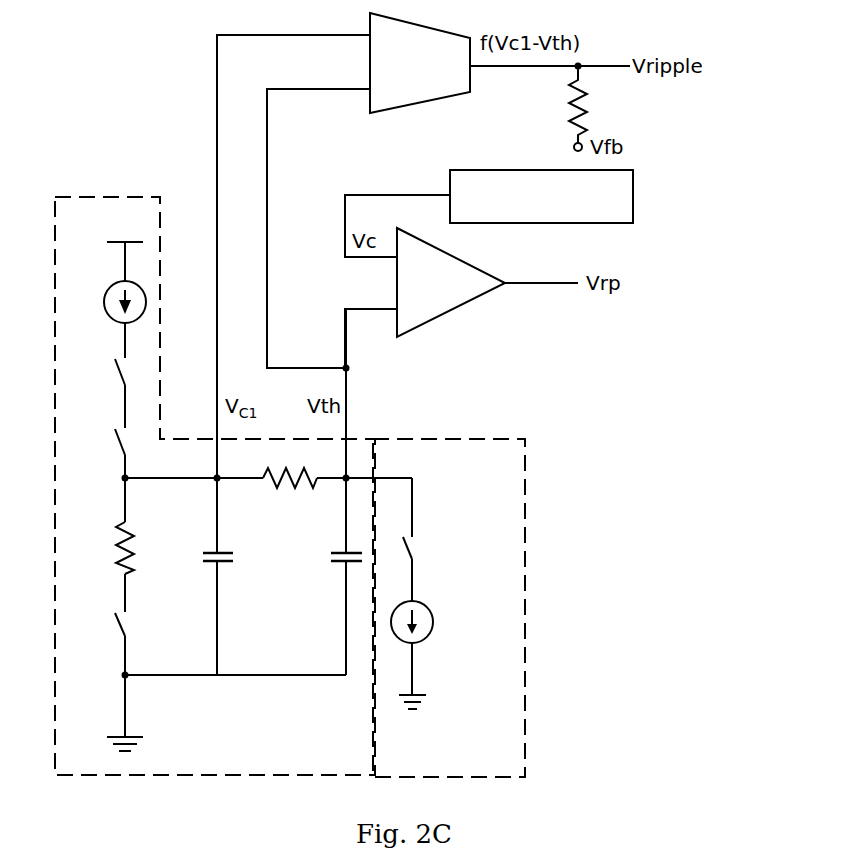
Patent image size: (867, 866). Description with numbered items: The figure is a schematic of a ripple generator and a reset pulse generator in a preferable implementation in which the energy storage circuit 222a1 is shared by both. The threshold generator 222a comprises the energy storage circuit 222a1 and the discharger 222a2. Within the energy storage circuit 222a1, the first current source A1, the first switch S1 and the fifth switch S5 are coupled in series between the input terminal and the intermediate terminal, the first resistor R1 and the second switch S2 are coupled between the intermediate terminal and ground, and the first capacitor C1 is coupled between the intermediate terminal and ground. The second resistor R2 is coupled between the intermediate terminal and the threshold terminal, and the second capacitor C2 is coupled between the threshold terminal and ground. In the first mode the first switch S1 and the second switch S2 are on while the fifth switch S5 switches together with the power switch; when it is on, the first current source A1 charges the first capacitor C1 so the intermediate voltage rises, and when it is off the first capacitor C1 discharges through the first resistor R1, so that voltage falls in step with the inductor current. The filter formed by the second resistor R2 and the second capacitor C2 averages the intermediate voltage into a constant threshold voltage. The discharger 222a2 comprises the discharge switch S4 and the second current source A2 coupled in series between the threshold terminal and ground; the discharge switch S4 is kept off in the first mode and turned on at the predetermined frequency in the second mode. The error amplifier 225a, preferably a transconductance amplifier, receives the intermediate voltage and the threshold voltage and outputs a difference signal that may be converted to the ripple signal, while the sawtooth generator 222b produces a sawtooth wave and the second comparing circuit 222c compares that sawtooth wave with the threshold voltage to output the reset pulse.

The error amplifier 225a is at (398, 76).
The sawtooth generator 222b is at (516, 208).
The second comparing circuit 222c is at (425, 294).
The threshold generator 222a is at (525, 537).
The energy storage circuit 222a1 is at (233, 486).
The discharger 222a2 is at (449, 608).
The first current source A1 is at (107, 302).
The second current source A2 is at (430, 622).
The first switch S1 is at (97, 441).
The second switch S2 is at (97, 624).
The discharge switch S4 is at (434, 551).
The fifth switch S5 is at (97, 372).
The first resistor R1 is at (103, 548).
The second resistor R2 is at (290, 498).
The first capacitor C1 is at (202, 556).
The second capacitor C2 is at (331, 556).